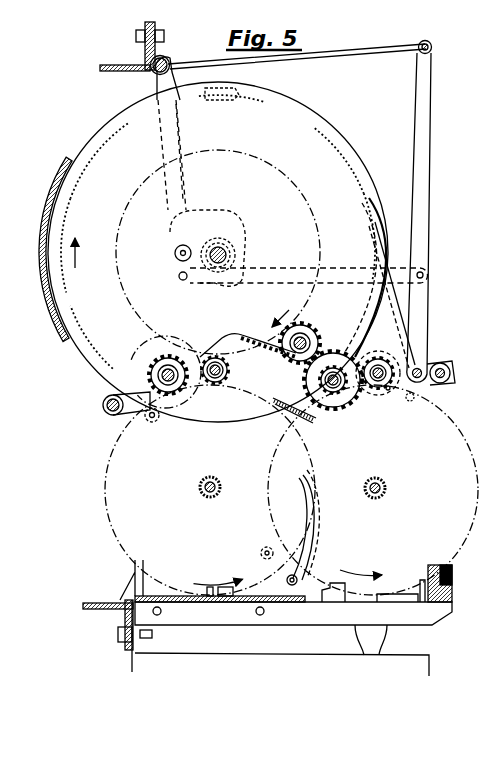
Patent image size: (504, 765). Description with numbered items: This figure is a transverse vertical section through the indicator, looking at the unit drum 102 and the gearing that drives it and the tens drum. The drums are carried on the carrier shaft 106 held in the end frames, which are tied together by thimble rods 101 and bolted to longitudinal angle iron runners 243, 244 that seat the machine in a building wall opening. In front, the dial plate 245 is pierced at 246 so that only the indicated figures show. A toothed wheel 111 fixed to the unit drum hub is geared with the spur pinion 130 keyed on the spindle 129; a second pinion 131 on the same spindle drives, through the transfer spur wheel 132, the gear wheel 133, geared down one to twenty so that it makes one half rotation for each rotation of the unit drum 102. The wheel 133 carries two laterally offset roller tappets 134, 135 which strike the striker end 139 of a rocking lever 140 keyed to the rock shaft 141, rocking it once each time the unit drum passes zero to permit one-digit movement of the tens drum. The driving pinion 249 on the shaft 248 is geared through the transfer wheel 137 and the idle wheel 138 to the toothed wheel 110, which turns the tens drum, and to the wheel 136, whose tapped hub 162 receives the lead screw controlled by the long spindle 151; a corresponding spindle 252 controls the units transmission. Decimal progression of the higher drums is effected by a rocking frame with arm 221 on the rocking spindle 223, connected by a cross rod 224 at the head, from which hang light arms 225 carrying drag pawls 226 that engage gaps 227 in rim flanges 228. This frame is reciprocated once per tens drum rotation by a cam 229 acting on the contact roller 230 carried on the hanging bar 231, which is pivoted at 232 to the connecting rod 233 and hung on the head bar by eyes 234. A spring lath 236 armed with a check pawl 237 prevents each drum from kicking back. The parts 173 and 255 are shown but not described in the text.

The unit drum 102 is at (330, 132).
The toothed wheel 110 is at (318, 250).
The carrier shaft 106 is at (230, 247).
The cam 229 is at (236, 222).
The contact roller 230 is at (175, 254).
The pivot 232 is at (181, 280).
The connecting rod 233 is at (336, 266).
The spring lath 236 is at (392, 263).
The check pawl 237 is at (360, 214).
The rim flange 228 is at (292, 106).
The gap 227 is at (133, 118).
The drag pawl 226 is at (226, 102).
The dial plate 245 is at (68, 165).
The pierced opening 246 is at (70, 214).
The angle iron runner 243 is at (116, 64).
The thimble rod 101 is at (168, 60).
The eye 234 is at (176, 74).
The light arm 225 is at (371, 61).
The cross rod 224 is at (432, 47).
The arm 221 is at (432, 171).
The rocking spindle 223 is at (442, 362).
The toothed wheel 111 is at (252, 334).
The idle wheel 138 is at (312, 330).
The spur pinion 130 is at (233, 372).
The spur pinion 131 is at (212, 382).
The gear 173 is at (342, 388).
The transfer wheel 137 is at (378, 356).
The shaft 248 is at (388, 390).
The driving pinion 249 is at (411, 401).
The spindle 129 is at (272, 400).
The transfer spur wheel 132 is at (142, 355).
The roller tappet 134 is at (153, 422).
The gear wheel 133 is at (113, 440).
The ratchet 255 is at (221, 484).
The spindle 252 is at (221, 492).
The roller tappet 135 is at (260, 552).
The wheel 136 is at (455, 418).
The tapped hub 162 is at (386, 485).
The long spindle 151 is at (386, 491).
The striker end 139 is at (315, 480).
The rocking lever 140 is at (298, 575).
The rock shaft 141 is at (334, 568).
The angle iron runner 244 is at (100, 603).
The hanging bar 231 is at (183, 180).